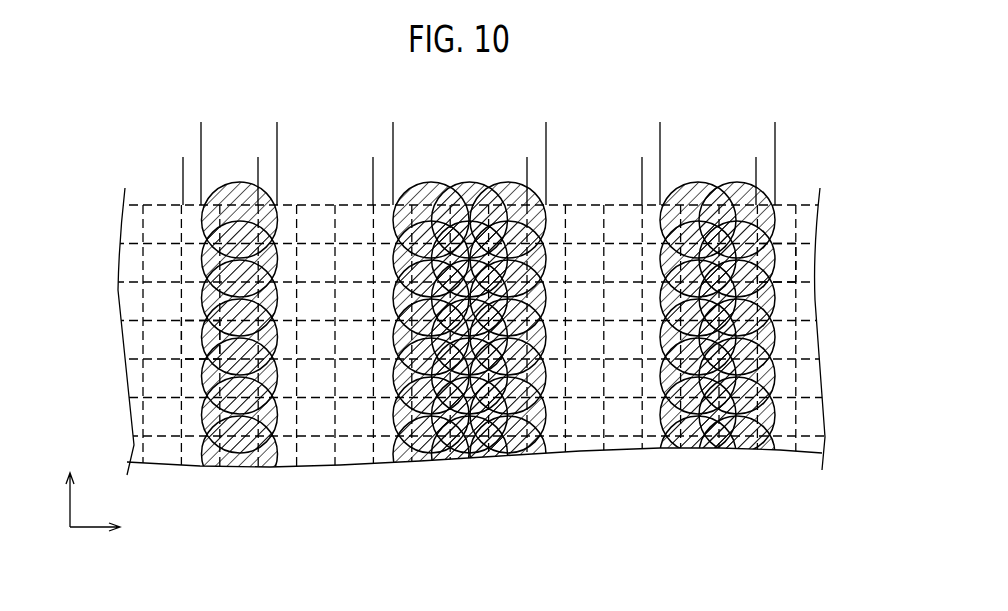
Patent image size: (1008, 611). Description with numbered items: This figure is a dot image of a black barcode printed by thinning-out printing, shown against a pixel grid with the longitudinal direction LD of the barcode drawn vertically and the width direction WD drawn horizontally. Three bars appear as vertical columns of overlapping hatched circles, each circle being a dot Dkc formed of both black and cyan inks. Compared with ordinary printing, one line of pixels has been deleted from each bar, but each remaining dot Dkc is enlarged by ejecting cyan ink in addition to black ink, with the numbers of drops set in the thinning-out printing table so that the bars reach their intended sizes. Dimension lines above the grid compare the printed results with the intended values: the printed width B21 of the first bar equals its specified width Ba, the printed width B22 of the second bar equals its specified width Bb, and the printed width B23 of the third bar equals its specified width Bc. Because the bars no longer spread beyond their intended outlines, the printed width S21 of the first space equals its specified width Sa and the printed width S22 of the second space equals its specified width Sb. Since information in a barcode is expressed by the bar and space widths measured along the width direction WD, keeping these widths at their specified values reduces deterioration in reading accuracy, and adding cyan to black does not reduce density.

The dot Dkc is at (205, 342).
The width of bar B21 is at (201, 128).
The width of space S21 is at (277, 128).
The width of bar B22 is at (393, 128).
The width of space S22 is at (546, 128).
The width of bar B23 is at (660, 128).
The specified width Ba is at (183, 163).
The specified width Sa is at (258, 163).
The specified width Bb is at (373, 163).
The specified width Sb is at (527, 163).
The specified width Bc is at (642, 163).
The longitudinal direction LD is at (72, 486).
The width direction WD is at (113, 521).